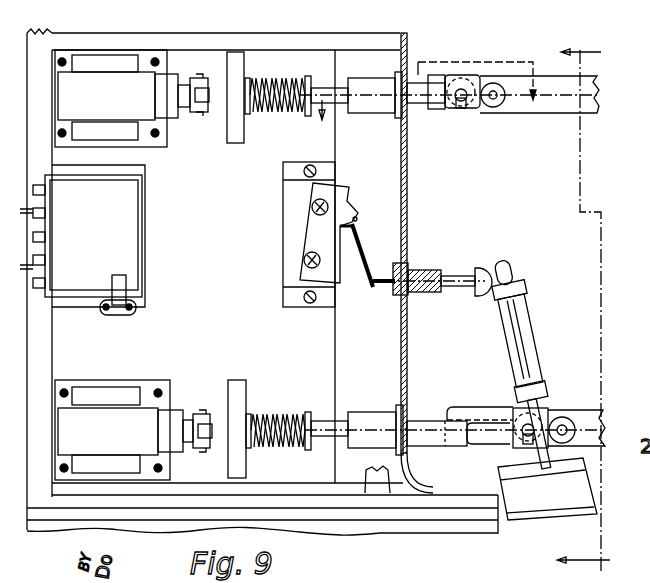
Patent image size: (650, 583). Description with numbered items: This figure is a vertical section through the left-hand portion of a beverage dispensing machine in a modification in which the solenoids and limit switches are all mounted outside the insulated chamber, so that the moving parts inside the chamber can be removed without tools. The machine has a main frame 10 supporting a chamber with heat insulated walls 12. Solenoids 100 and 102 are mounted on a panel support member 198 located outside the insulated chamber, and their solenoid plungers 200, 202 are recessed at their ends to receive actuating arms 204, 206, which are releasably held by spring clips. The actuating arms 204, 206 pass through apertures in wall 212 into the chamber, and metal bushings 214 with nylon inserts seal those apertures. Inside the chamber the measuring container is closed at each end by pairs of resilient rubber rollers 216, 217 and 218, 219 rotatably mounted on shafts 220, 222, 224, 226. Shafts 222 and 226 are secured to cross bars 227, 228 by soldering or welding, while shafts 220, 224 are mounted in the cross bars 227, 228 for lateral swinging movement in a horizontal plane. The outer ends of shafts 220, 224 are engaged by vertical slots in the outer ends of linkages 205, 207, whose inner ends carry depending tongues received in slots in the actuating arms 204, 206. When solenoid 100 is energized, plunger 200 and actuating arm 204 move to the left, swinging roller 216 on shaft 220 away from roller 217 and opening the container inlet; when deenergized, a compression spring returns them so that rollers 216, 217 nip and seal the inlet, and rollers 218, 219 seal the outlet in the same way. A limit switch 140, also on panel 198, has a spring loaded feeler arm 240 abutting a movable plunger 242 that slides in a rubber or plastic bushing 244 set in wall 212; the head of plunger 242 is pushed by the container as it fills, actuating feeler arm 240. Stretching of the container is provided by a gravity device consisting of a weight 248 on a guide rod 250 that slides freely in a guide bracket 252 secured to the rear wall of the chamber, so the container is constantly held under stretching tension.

The main frame 10 is at (583, 306).
The heat insulated wall 12 is at (436, 108).
The solenoid 100 is at (118, 105).
The lower solenoid coil 102 is at (121, 441).
The limit switch 140 is at (310, 218).
The panel support member 198 is at (215, 320).
The solenoid plunger 200 is at (318, 88).
The solenoid plunger 202 is at (318, 424).
The actuating arm 204 is at (419, 104).
The linkage 205 is at (433, 75).
The actuating arm 206 is at (438, 434).
The linkage 207 is at (453, 399).
The wall 212 is at (407, 198).
The metal bushing 214 is at (365, 88).
The resilient rubber roller 216 is at (463, 75).
The resilient rubber roller 217 is at (493, 83).
The resilient rubber roller 218 is at (513, 411).
The resilient rubber roller 219 is at (563, 416).
The shaft 220 is at (461, 101).
The shaft 222 is at (493, 107).
The shaft 224 is at (524, 434).
The shaft 226 is at (570, 430).
The cross bar 227 is at (568, 110).
The cross bar 228 is at (594, 410).
The feeler arm 240 is at (363, 262).
The movable plunger 242 is at (462, 278).
The bushing 244 is at (428, 258).
The weight 248 is at (542, 500).
The guide rod 250 is at (525, 365).
The guide bracket 252 is at (530, 312).